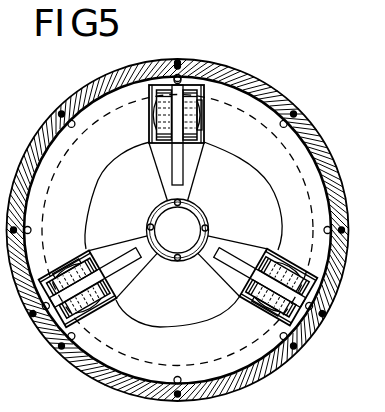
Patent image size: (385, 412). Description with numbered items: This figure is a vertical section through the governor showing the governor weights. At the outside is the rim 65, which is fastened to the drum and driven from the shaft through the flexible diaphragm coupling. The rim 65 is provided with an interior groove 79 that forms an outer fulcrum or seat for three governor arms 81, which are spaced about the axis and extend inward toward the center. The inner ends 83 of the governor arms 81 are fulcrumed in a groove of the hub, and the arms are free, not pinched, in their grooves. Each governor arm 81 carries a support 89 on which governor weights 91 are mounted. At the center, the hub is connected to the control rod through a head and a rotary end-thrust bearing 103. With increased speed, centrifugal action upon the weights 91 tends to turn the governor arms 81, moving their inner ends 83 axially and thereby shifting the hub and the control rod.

The rim 65 is at (244, 72).
The interior groove 79 is at (228, 106).
The governor weights 91 is at (150, 104).
The support 89 is at (183, 140).
The governor arms 81 is at (191, 183).
The inner ends 83 is at (173, 203).
The rotary end-thrust bearing 103 is at (184, 240).